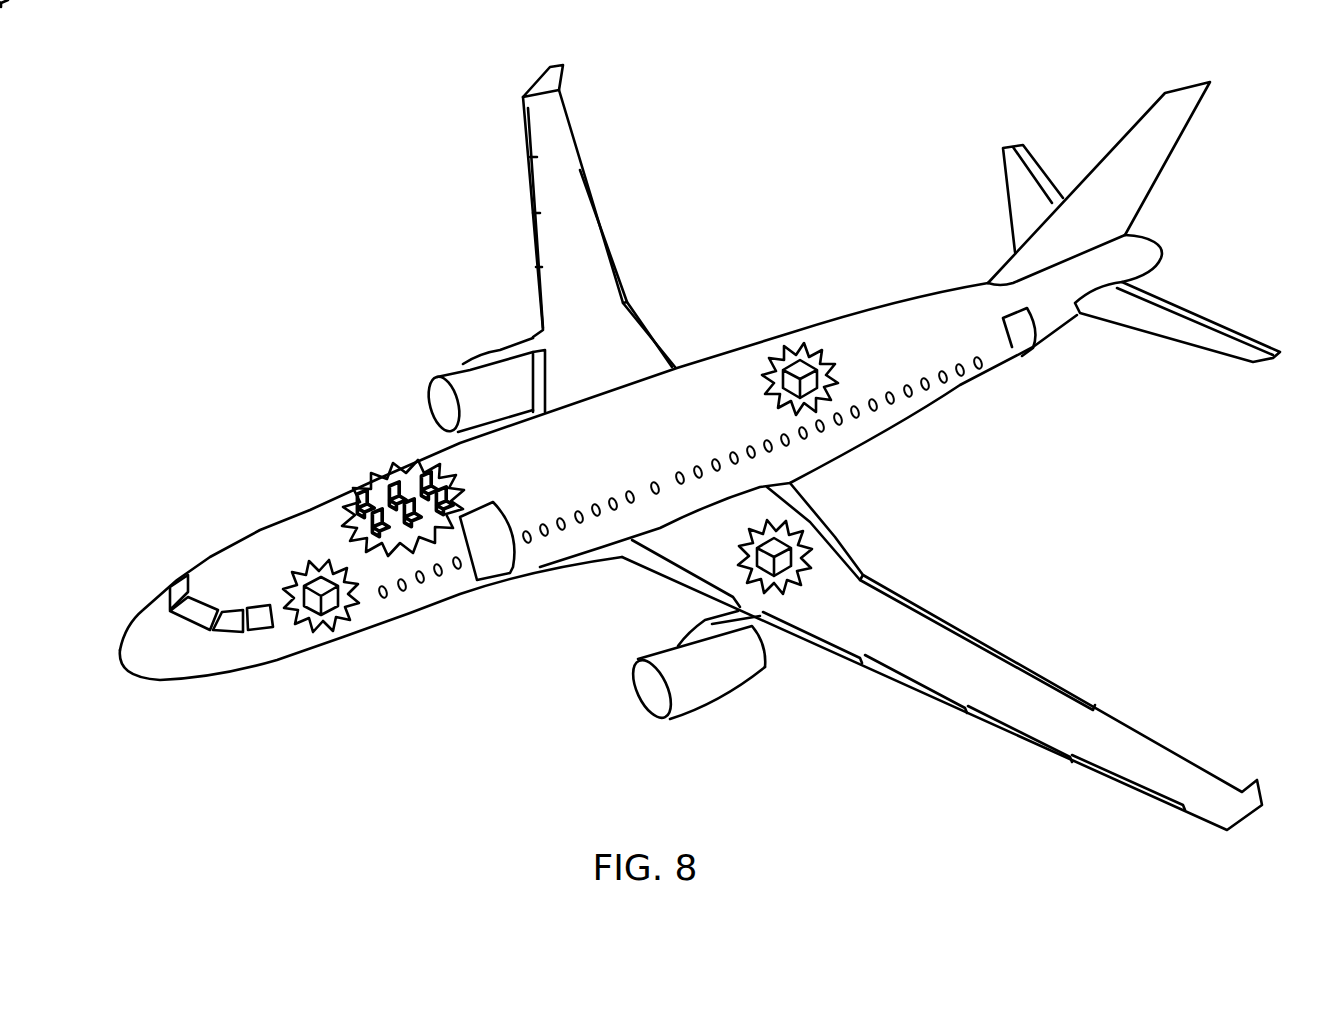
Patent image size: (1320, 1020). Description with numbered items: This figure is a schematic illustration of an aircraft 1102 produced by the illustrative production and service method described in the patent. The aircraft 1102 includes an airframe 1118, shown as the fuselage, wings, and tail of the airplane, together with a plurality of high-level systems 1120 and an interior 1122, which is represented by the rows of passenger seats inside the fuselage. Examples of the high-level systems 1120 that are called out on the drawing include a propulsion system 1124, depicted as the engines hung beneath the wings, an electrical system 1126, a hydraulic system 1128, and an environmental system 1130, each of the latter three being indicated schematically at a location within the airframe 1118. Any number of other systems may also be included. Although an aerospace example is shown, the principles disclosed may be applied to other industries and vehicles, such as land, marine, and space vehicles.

The aircraft 1102 is at (350, 193).
The airframe 1118 is at (358, 447).
The high-level systems 1120 is at (1052, 525).
The interior 1122 is at (368, 503).
The propulsion system 1124 is at (457, 371).
The electrical system 1126 is at (318, 582).
The hydraulic system 1128 is at (782, 548).
The environmental system 1130 is at (797, 362).